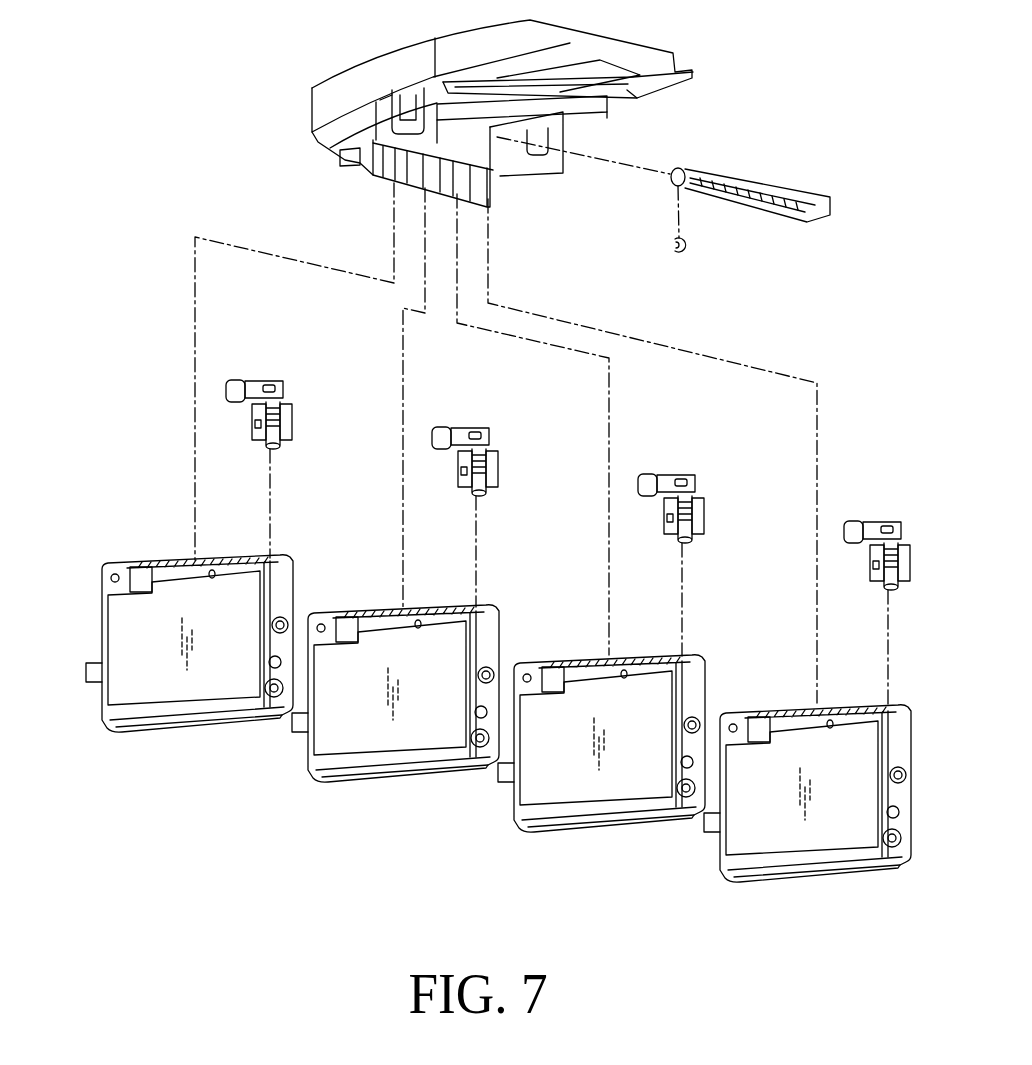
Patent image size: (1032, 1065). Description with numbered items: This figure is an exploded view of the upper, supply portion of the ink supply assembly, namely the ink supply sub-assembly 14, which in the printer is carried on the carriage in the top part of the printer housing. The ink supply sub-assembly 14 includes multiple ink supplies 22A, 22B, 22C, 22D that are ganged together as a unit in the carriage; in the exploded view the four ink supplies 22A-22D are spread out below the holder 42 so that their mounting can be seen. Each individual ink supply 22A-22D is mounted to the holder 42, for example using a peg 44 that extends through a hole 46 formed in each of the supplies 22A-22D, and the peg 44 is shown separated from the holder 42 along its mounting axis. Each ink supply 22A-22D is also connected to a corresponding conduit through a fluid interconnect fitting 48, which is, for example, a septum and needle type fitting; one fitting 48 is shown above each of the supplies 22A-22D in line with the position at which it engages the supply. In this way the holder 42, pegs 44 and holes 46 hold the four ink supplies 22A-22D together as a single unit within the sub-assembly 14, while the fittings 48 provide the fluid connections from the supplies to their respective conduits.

The ink supply sub-assembly 14 is at (95, 33).
The holder 42 is at (605, 52).
The peg 44 is at (758, 192).
The hole 46 is at (138, 573).
The fluid interconnect fitting 48 is at (270, 382).
The ink supply 22A is at (165, 720).
The ink supply 22B is at (371, 770).
The ink supply 22C is at (577, 820).
The ink supply 22D is at (783, 868).